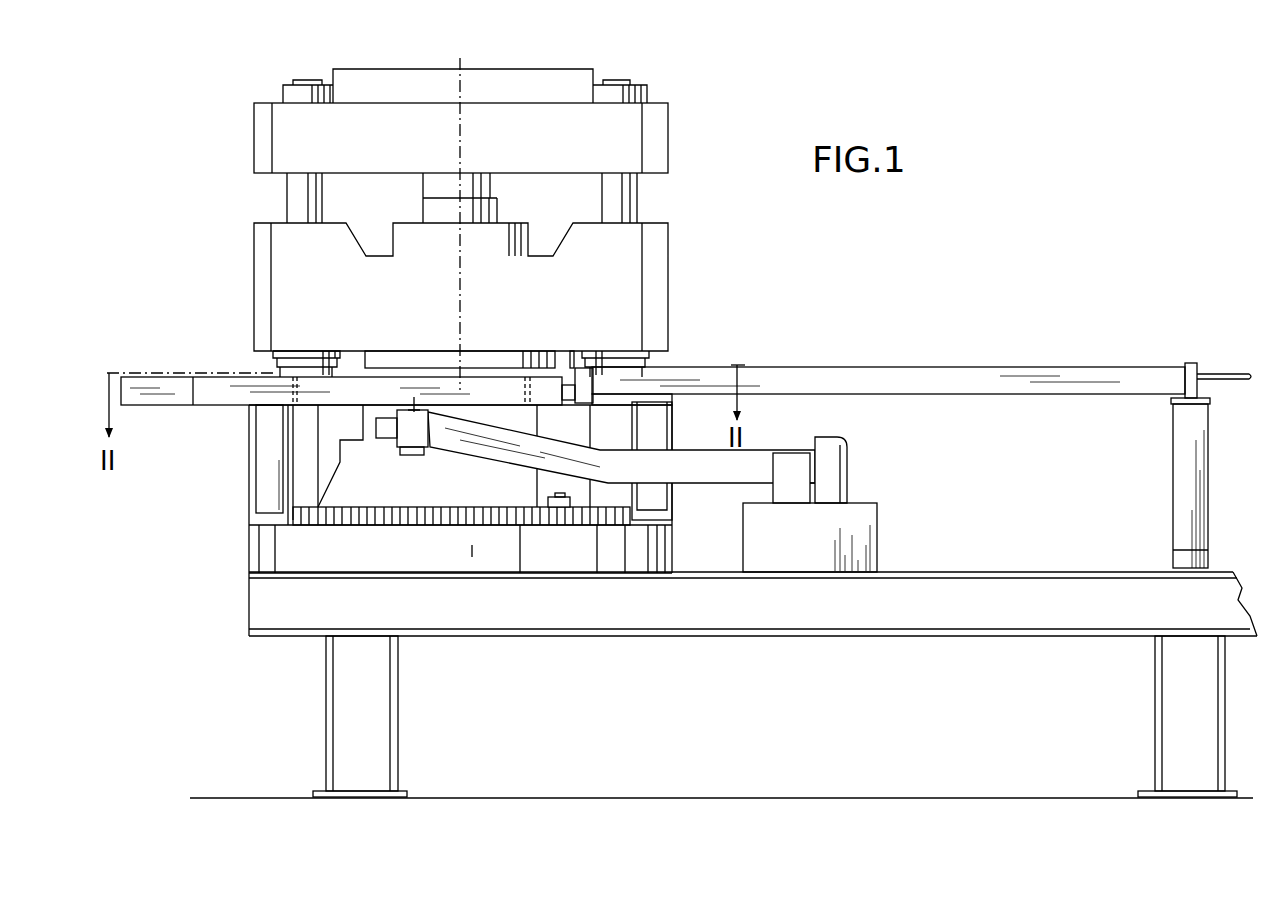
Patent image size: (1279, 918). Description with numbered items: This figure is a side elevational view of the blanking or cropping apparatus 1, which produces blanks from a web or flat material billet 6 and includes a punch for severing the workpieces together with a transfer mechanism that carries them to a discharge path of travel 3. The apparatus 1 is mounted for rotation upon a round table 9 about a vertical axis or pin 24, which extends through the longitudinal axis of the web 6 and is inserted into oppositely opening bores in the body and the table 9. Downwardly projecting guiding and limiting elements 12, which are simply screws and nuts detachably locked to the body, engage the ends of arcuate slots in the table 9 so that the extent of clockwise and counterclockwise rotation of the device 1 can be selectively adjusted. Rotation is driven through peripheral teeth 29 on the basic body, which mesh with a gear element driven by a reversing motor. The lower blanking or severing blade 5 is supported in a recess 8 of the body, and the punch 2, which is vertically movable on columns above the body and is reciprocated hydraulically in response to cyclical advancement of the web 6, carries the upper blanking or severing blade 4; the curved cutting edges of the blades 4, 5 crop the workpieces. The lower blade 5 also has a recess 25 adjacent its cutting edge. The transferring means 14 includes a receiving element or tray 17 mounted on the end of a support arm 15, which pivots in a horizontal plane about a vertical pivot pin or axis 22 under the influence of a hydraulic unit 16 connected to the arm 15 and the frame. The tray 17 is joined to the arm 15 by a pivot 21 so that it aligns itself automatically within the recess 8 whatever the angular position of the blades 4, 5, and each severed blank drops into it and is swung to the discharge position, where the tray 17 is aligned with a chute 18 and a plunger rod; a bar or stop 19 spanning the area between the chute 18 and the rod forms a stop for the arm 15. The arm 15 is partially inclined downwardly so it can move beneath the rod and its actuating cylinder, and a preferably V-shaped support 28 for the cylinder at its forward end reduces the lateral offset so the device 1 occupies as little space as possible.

The blanking or cropping apparatus 1 is at (419, 348).
The punch 2 is at (602, 238).
The discharge path of travel 3 is at (341, 402).
The upper blanking or severing blade 4 is at (487, 356).
The lower blanking or severing blade 5 is at (385, 430).
The web or flat material billet 6 is at (572, 350).
The recess 8 is at (345, 424).
The round table 9 is at (261, 553).
The guiding and limiting elements 12 is at (562, 527).
The transferring means 14 is at (755, 472).
The support arm 15 is at (586, 458).
The hydraulic unit 16 is at (799, 462).
The receiving element or tray 17 is at (491, 386).
The chute 18 is at (157, 386).
The bar or stop 19 is at (216, 388).
The pivot 21 is at (408, 440).
The vertical pivot pin or axis 22 is at (847, 445).
The vertical axis or pin 24 is at (461, 62).
The recess 25 is at (388, 413).
The support 28 is at (657, 430).
The peripheral teeth 29 is at (548, 527).